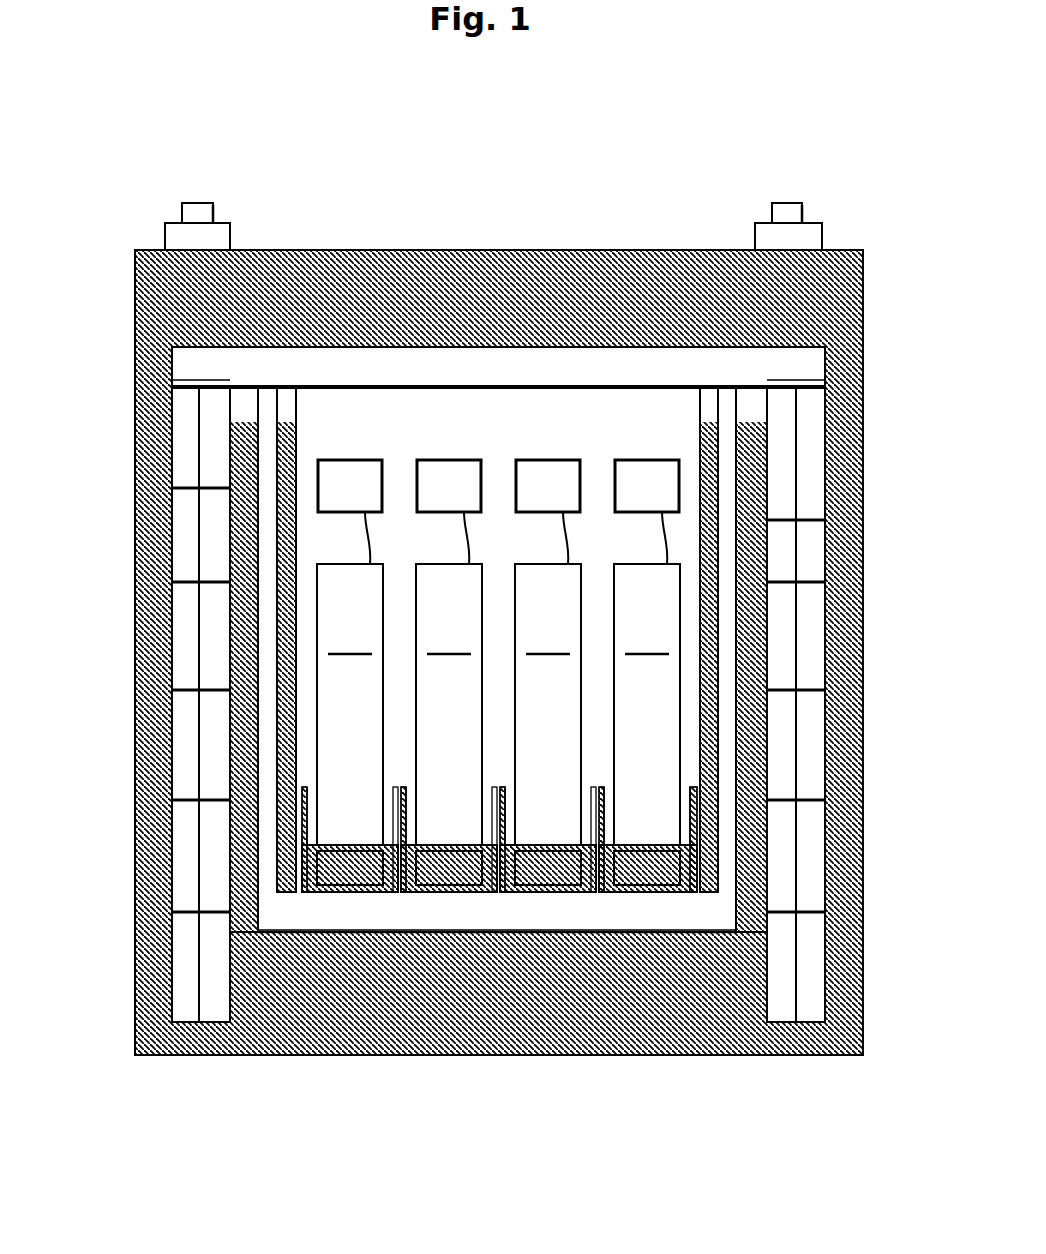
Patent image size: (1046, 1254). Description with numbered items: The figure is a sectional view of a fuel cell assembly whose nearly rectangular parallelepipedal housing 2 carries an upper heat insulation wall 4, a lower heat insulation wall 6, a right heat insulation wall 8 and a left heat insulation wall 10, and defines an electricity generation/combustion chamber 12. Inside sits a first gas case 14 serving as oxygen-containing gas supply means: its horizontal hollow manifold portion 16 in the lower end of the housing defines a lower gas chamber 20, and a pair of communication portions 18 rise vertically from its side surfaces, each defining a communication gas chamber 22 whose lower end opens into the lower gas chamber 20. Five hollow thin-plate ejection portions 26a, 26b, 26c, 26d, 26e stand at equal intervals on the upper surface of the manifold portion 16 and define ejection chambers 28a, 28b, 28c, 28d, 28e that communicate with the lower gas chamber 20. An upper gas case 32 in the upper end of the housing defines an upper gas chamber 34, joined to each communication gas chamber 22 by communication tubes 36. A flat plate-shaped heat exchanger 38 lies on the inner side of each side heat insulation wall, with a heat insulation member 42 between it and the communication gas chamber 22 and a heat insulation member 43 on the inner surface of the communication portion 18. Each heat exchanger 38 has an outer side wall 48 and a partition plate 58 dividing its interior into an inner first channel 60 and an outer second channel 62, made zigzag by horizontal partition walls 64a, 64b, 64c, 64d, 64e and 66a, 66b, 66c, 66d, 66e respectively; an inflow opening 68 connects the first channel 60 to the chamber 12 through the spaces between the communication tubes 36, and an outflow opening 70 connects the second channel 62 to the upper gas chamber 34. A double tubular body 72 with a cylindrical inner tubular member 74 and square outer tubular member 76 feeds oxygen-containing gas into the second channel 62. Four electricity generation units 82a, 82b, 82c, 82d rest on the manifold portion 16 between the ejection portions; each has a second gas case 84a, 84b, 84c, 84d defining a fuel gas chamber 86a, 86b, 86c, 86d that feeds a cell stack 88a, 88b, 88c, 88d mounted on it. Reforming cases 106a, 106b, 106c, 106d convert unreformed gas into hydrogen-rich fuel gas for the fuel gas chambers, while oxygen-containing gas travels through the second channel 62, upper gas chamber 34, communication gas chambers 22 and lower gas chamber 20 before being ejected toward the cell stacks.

The housing 2 is at (893, 416).
The upper heat insulation wall 4 is at (500, 300).
The lower heat insulation wall 6 is at (630, 1040).
The right heat insulation wall 8 is at (860, 540).
The left heat insulation wall 10 is at (150, 628).
The electricity generation/combustion chamber 12 is at (668, 545).
The first gas case 14 is at (478, 940).
The manifold portion 16 is at (387, 935).
The communication portion 18 is at (215, 876).
The lower gas chamber 20 is at (580, 915).
The communication gas chamber 22 is at (245, 524).
The upper gas case 32 is at (400, 345).
The upper gas chamber 34 is at (585, 387).
The communication tube 36 is at (296, 406).
The heat exchanger 38 is at (165, 776).
The heat insulation member 42 is at (215, 488).
The heat insulation member 43 is at (300, 442).
The outer side wall 48 is at (235, 546).
The partition plate 58 is at (215, 649).
The first channel 60 is at (215, 896).
The second channel 62 is at (215, 761).
The partition wall 64a is at (215, 441).
The partition wall 64b is at (215, 599).
The partition wall 64c is at (215, 706).
The partition wall 64d is at (215, 831).
The partition wall 64e is at (215, 941).
The partition wall 66a is at (215, 471).
The partition wall 66b is at (215, 582).
The partition wall 66c is at (215, 690).
The partition wall 66d is at (215, 801).
The partition wall 66e is at (215, 916).
The inflow opening 68 is at (215, 407).
The outflow opening 70 is at (175, 376).
The double tubular body 72 is at (214, 223).
The inner tubular member 74 is at (183, 210).
The outer tubular member 76 is at (232, 238).
The electricity generation unit 82a is at (366, 525).
The electricity generation unit 82b is at (465, 525).
The electricity generation unit 82c is at (564, 525).
The electricity generation unit 82d is at (663, 525).
The second gas case 84a is at (353, 845).
The second gas case 84b is at (452, 845).
The second gas case 84c is at (551, 845).
The second gas case 84d is at (649, 845).
The fuel gas chamber 86a is at (370, 880).
The fuel gas chamber 86b is at (475, 880).
The fuel gas chamber 86c is at (570, 880).
The fuel gas chamber 86d is at (640, 880).
The cell stack 88a is at (350, 704).
The cell stack 88b is at (449, 704).
The cell stack 88c is at (548, 704).
The cell stack 88d is at (647, 704).
The ejection portion 26a is at (307, 792).
The ejection portion 26b is at (407, 792).
The ejection portion 26c is at (506, 792).
The ejection portion 26d is at (604, 792).
The ejection portion 26e is at (692, 790).
The ejection chamber 28a is at (315, 802).
The ejection chamber 28b is at (413, 802).
The ejection chamber 28c is at (513, 802).
The ejection chamber 28d is at (610, 802).
The ejection chamber 28e is at (684, 840).
The reforming case 106a is at (358, 462).
The reforming case 106b is at (465, 460).
The reforming case 106c is at (545, 460).
The reforming case 106d is at (642, 460).